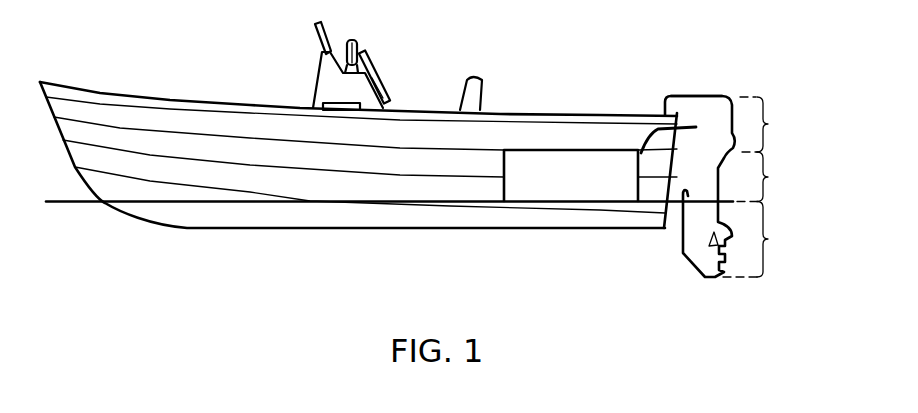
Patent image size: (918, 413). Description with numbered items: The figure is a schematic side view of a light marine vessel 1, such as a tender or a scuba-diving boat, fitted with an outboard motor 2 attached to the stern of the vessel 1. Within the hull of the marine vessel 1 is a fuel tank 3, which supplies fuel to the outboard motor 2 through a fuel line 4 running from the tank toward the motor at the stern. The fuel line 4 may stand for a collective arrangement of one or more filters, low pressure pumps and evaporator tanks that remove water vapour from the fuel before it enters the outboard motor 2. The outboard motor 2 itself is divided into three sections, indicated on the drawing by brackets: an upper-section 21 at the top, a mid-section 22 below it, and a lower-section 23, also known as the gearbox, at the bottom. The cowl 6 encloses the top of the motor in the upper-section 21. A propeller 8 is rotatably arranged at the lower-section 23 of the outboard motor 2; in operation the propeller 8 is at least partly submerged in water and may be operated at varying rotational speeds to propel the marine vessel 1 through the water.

The marine vessel 1 is at (182, 65).
The outboard motor 2 is at (690, 103).
The fuel tank 3 is at (545, 183).
The fuel line 4 is at (655, 130).
The cowl 6 is at (707, 95).
The propeller 8 is at (723, 268).
The upper-section 21 is at (770, 124).
The mid-section 22 is at (771, 178).
The lower-section 23 is at (770, 239).